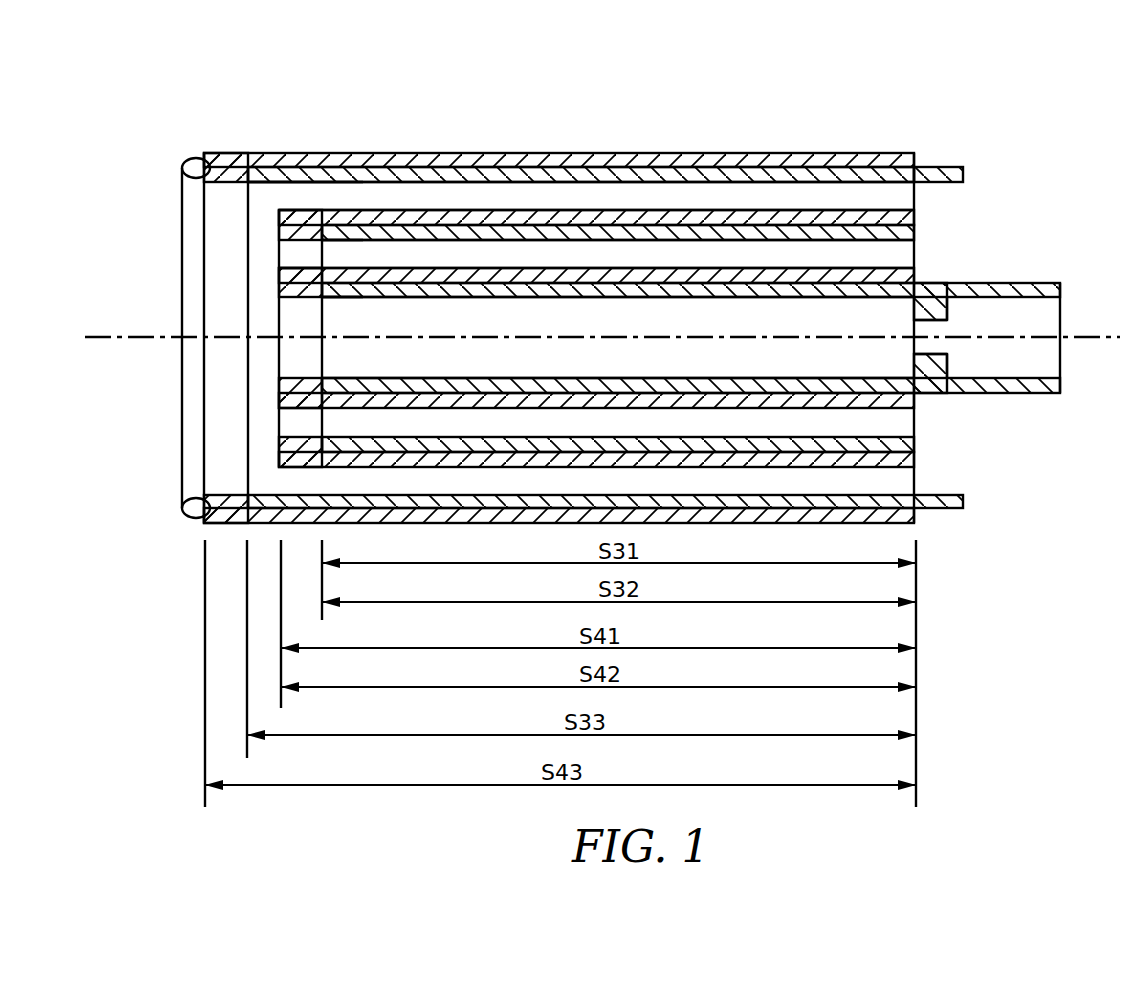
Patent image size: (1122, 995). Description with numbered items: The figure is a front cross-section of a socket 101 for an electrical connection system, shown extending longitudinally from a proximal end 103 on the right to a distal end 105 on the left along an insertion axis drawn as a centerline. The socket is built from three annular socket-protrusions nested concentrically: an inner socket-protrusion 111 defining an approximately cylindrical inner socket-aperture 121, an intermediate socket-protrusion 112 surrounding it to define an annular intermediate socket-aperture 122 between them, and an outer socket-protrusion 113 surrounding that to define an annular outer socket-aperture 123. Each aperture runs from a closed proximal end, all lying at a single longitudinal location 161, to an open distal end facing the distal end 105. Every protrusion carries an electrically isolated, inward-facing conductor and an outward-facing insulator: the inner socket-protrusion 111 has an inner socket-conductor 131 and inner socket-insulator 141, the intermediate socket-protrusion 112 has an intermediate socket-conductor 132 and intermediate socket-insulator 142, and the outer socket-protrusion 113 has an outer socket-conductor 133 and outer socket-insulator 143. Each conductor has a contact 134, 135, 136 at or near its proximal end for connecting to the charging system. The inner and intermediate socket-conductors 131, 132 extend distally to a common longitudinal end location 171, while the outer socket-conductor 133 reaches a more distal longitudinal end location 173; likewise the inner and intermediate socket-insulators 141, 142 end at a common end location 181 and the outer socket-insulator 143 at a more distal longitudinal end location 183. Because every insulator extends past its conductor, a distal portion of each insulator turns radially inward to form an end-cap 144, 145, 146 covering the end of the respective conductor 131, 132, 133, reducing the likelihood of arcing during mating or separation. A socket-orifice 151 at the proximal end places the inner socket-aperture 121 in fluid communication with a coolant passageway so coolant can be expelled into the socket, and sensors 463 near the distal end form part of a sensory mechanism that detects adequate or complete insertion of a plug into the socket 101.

The socket 101 is at (1036, 93).
The proximal end 103 is at (916, 247).
The distal end 105 is at (200, 363).
The inner socket-protrusion 111 is at (818, 312).
The intermediate socket-protrusion 112 is at (765, 251).
The outer socket-protrusion 113 is at (717, 196).
The inner socket-aperture 121 is at (363, 318).
The intermediate socket-aperture 122 is at (363, 260).
The outer socket-aperture 123 is at (363, 201).
The inner socket-conductor 131 is at (632, 293).
The intermediate socket-conductor 132 is at (582, 235).
The outer socket-conductor 133 is at (533, 175).
The contact 134 is at (1045, 394).
The contact 135 is at (955, 452).
The contact 136 is at (955, 167).
The inner socket-insulator 141 is at (446, 276).
The intermediate socket-insulator 142 is at (397, 218).
The outer socket-insulator 143 is at (343, 160).
The end-cap 144 is at (283, 398).
The end-cap 145 is at (283, 455).
The end-cap 146 is at (205, 497).
The socket-orifice 151 is at (943, 336).
The longitudinal location 161 is at (917, 668).
The longitudinal end location 171 is at (322, 588).
The longitudinal end location 173 is at (247, 702).
The end location 181 is at (281, 637).
The longitudinal end location 183 is at (205, 750).
The sensor 463 is at (182, 167).